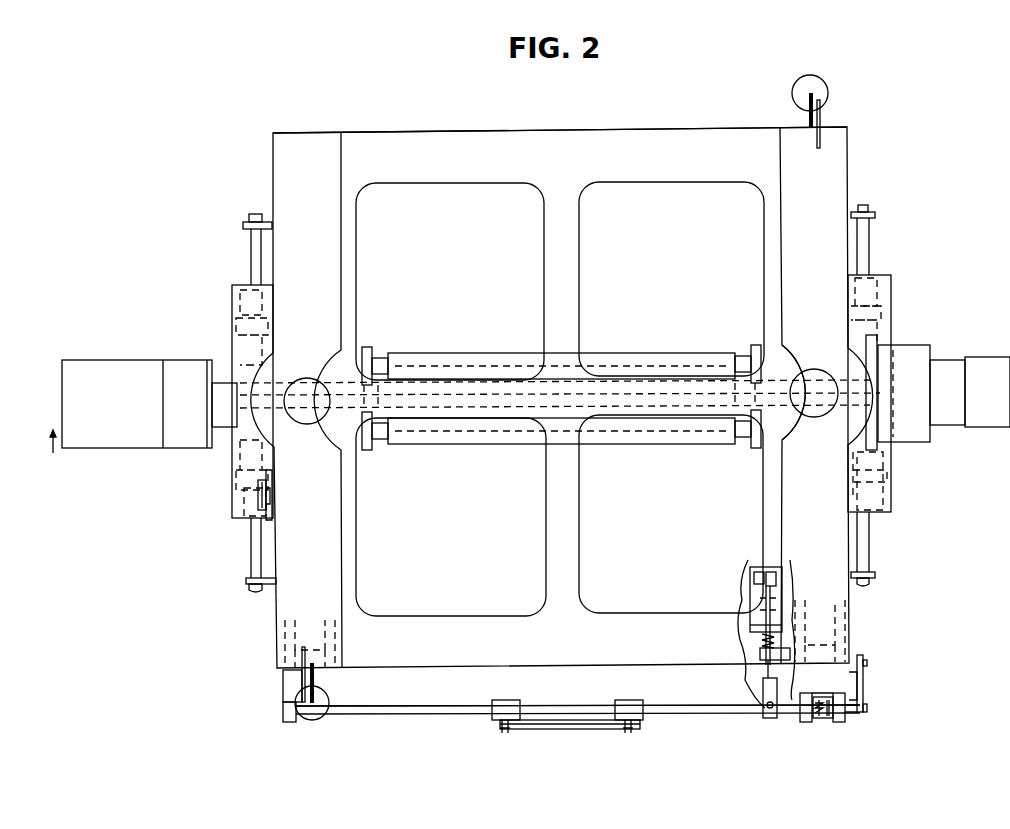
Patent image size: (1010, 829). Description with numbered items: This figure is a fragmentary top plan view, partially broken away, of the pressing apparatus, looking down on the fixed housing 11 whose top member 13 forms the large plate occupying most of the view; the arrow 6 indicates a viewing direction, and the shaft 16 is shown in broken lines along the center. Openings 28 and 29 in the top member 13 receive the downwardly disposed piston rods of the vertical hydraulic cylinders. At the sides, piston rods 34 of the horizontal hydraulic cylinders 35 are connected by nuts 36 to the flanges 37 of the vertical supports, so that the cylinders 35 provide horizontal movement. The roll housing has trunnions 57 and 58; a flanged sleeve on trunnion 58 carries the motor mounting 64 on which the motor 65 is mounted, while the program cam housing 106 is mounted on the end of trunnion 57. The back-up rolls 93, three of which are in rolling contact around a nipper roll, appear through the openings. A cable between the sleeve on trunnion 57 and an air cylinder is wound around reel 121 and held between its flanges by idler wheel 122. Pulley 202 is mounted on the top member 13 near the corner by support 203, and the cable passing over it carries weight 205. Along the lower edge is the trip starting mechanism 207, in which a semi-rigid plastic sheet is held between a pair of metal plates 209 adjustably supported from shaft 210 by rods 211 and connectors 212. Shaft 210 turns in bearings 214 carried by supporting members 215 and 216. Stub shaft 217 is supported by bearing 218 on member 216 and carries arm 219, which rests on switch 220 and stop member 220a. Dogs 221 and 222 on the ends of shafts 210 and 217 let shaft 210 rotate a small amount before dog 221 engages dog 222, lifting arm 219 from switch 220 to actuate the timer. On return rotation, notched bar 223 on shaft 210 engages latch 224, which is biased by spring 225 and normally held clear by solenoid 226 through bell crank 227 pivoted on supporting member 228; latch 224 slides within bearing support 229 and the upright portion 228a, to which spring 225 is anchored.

The viewing direction arrow 6 is at (49, 452).
The fixed housing 11 is at (851, 146).
The top member 13 is at (562, 140).
The shaft 16 is at (411, 392).
The opening 28 is at (305, 426).
The opening 29 is at (817, 418).
The piston rod 34 is at (254, 252).
The horizontal hydraulic cylinder 35 is at (247, 500).
The nut 36 is at (249, 216).
The flange 37 is at (243, 226).
The trunnion 57 is at (242, 432).
The trunnion 58 is at (787, 378).
The motor mounting 64 is at (910, 348).
The motor 65 is at (981, 360).
The back-up roll 93 is at (488, 428).
The program cam housing 106 is at (158, 362).
The reel 121 is at (252, 485).
The idler wheel 122 is at (268, 520).
The pulley 202 is at (808, 118).
The support 203 is at (822, 118).
The weight 205 is at (809, 88).
The trip starting mechanism 207 is at (461, 706).
The plate 209 is at (552, 730).
The shaft 210 is at (390, 706).
The rod 211 is at (500, 725).
The connector 212 is at (612, 705).
The bearing 214 is at (290, 722).
The supporting member 215 is at (283, 690).
The supporting member 216 is at (820, 696).
The stub shaft 217 is at (867, 708).
The bearing 218 is at (840, 722).
The arm 219 is at (863, 672).
The switch 220 is at (863, 686).
The stop member 220a is at (867, 663).
The dog 221 is at (818, 722).
The dog 222 is at (829, 722).
The notched bar 223 is at (763, 693).
The latch 224 is at (771, 630).
The spring 225 is at (764, 645).
The solenoid 226 is at (758, 578).
The bell crank 227 is at (776, 588).
The supporting member 228 is at (752, 598).
The upright portion 228a is at (760, 628).
The bearing support 229 is at (765, 660).